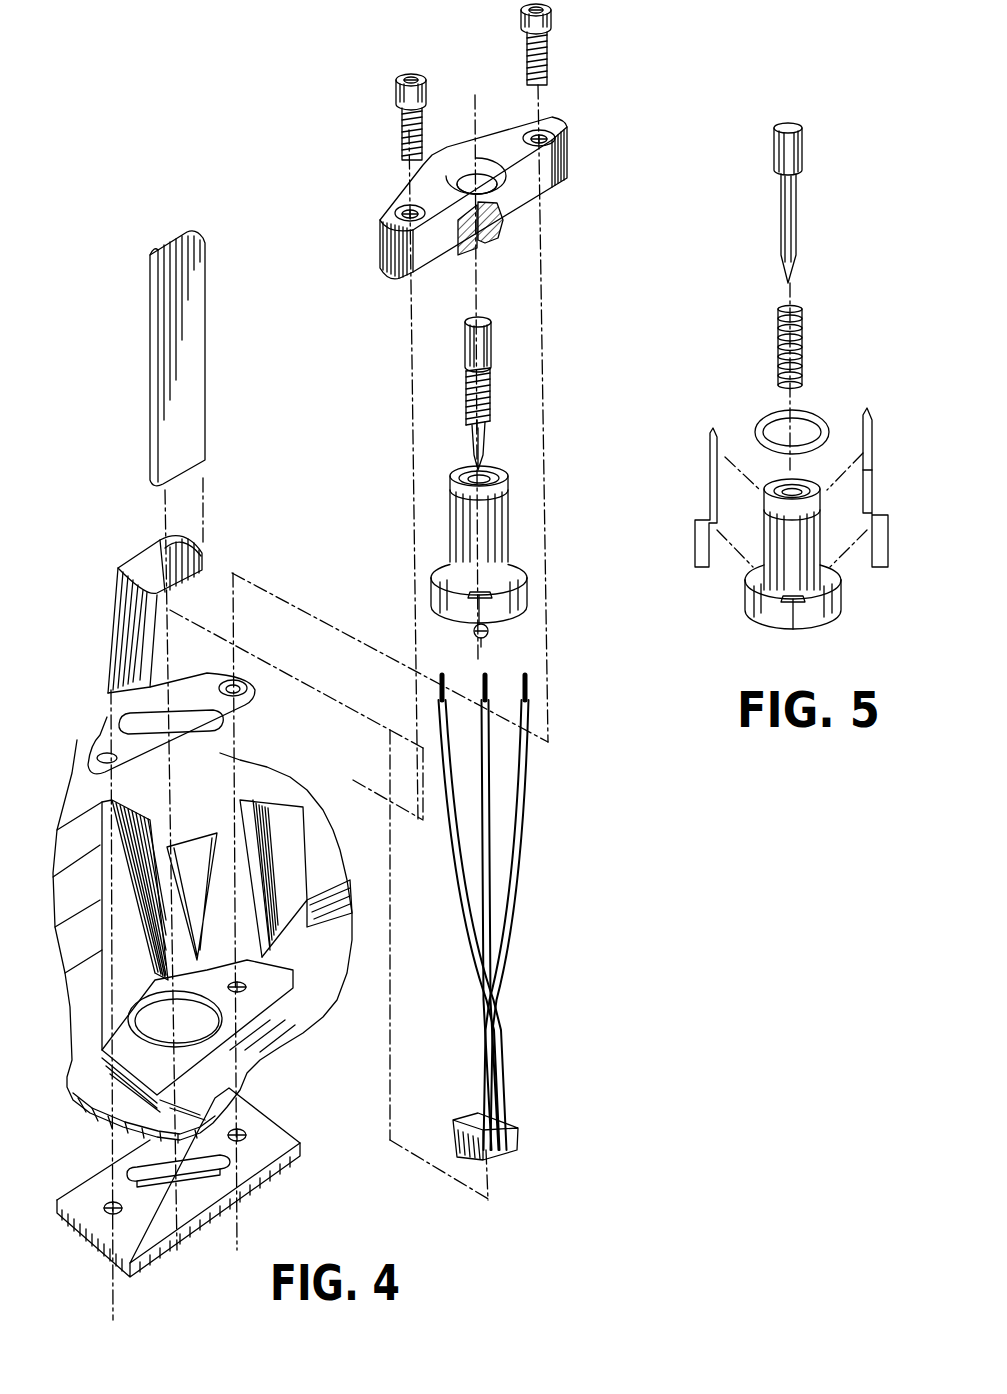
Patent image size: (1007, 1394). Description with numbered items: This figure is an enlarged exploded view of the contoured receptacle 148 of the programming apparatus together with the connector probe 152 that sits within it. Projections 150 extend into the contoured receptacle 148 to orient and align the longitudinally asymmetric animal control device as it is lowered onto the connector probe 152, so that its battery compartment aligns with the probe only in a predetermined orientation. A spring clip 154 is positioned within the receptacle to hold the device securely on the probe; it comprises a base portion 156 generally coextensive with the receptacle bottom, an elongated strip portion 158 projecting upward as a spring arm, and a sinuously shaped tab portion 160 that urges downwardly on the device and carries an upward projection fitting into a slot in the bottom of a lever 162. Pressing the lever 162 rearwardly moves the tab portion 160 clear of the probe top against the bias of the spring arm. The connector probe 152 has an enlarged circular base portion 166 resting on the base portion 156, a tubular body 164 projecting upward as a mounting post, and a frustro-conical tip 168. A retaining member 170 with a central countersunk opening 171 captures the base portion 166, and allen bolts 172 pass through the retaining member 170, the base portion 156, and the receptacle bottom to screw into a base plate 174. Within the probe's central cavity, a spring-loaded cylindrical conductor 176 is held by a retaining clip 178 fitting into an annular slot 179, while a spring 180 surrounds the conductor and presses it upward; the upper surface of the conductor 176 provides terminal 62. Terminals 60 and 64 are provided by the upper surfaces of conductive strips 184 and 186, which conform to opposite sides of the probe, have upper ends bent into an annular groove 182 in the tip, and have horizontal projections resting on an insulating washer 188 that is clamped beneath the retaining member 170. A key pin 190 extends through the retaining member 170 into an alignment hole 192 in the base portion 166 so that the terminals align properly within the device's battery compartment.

In FIG. 4, the terminal 60 is at (502, 472).
In FIG. 5, the terminal 60 is at (868, 418).
In FIG. 4, the terminal 62 is at (478, 318).
In FIG. 5, the terminal 62 is at (790, 128).
In FIG. 4, the terminal 64 is at (457, 472).
In FIG. 5, the terminal 64 is at (713, 428).
In FIG. 4, the contoured receptacle 148 is at (338, 858).
In FIG. 4, the projections 150 is at (225, 802).
In FIG. 4, the connector probe 152 is at (402, 403).
In FIG. 5, the connector probe 152 is at (832, 315).
In FIG. 4, the spring clip 154 is at (106, 597).
In FIG. 4, the base portion 156 is at (113, 694).
In FIG. 4, the elongated strip portion 158 is at (130, 628).
In FIG. 4, the tab portion 160 is at (203, 556).
In FIG. 4, the lever 162 is at (216, 451).
In FIG. 4, the tubular body 164 is at (479, 514).
In FIG. 5, the tubular body 164 is at (806, 538).
In FIG. 4, the base portion 166 is at (440, 585).
In FIG. 5, the base portion 166 is at (818, 618).
In FIG. 4, the frustro-conical tip 168 is at (507, 487).
In FIG. 5, the frustro-conical tip 168 is at (763, 500).
In FIG. 4, the retaining member 170 is at (572, 135).
In FIG. 4, the central countersunk opening 171 is at (490, 168).
In FIG. 4, the allen bolts 172 is at (396, 80).
In FIG. 4, the base plate 174 is at (282, 1133).
In FIG. 4, the spring-loaded cylindrical conductor 176 is at (500, 383).
In FIG. 5, the spring-loaded cylindrical conductor 176 is at (812, 190).
In FIG. 4, the retaining clip 178 is at (492, 634).
In FIG. 4, the annular slot 179 is at (482, 442).
In FIG. 5, the annular slot 179 is at (782, 246).
In FIG. 5, the spring 180 is at (800, 350).
In FIG. 5, the annular groove 182 is at (873, 478).
In FIG. 5, the conductive strip 184 is at (874, 459).
In FIG. 5, the conductive strip 186 is at (694, 485).
In FIG. 5, the insulating washer 188 is at (812, 418).
In FIG. 4, the key pin 190 is at (500, 218).
In FIG. 4, the alignment hole 192 is at (533, 578).
In FIG. 5, the alignment hole 192 is at (786, 615).